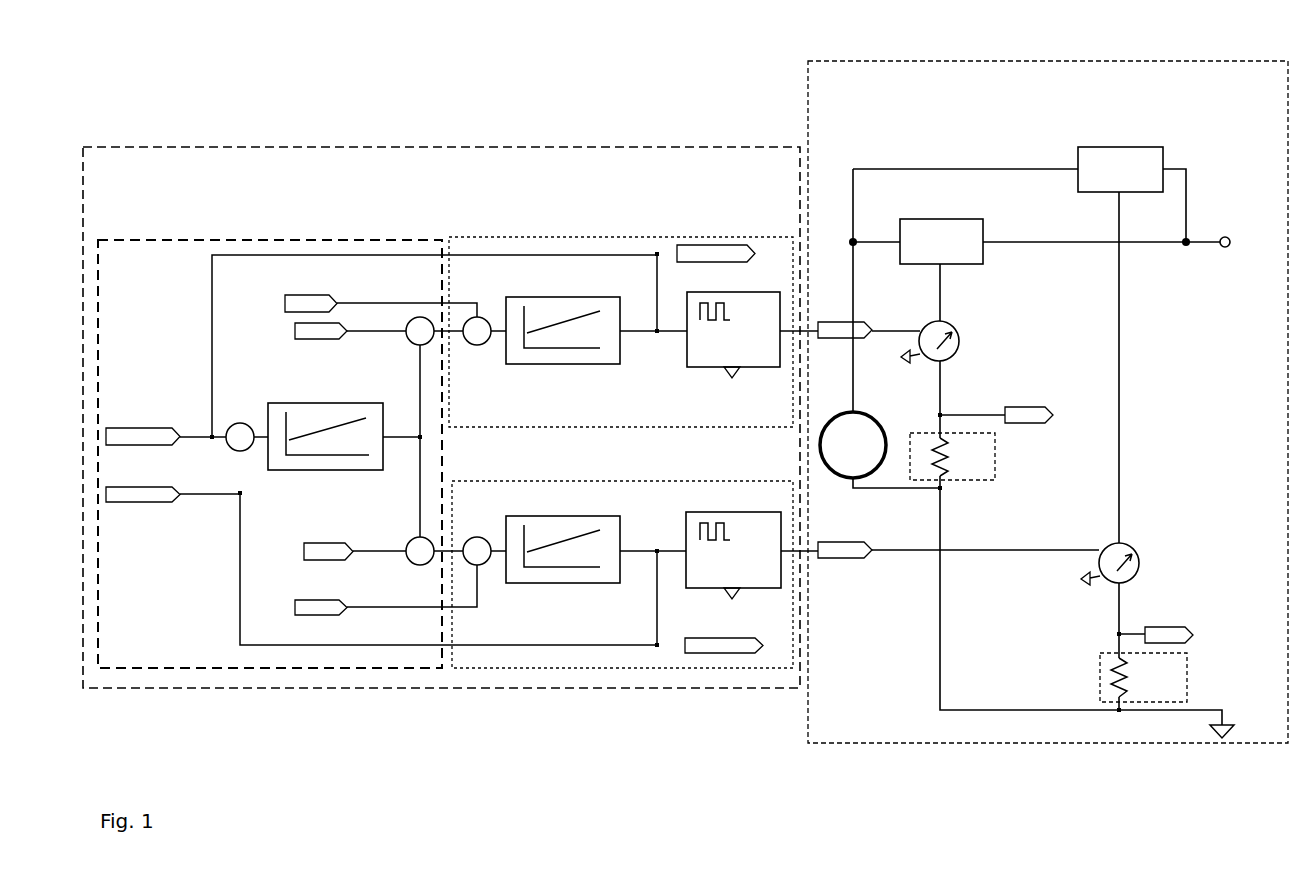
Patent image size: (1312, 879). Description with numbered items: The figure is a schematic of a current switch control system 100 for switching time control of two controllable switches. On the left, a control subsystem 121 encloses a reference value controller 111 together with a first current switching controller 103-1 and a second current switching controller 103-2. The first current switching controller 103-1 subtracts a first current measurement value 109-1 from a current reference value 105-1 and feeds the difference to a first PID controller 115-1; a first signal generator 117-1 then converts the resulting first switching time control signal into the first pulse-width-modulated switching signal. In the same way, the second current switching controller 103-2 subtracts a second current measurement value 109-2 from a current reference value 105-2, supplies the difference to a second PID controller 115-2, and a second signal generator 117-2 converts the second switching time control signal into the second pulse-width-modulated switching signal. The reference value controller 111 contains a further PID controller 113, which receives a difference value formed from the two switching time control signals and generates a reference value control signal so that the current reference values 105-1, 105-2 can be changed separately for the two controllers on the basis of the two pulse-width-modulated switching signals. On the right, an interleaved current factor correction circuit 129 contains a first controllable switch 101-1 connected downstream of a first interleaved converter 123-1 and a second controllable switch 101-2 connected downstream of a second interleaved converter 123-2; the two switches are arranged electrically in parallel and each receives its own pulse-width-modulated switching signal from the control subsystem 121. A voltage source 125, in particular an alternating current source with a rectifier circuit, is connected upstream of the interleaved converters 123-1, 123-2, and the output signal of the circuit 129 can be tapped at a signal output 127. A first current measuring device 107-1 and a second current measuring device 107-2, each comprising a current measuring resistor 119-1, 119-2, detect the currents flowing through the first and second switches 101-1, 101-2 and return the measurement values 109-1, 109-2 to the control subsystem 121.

The current switch control system 100 is at (240, 86).
The control subsystem 121 is at (165, 147).
The reference value controller 111 is at (308, 240).
The further PID controller 113 is at (337, 465).
The first current switching controller 103-1 is at (520, 237).
The second current switching controller 103-2 is at (520, 480).
The current reference value 105-1 is at (350, 343).
The current reference value 105-2 is at (355, 539).
The first current measurement value 109-1 is at (674, 347).
The second current measurement value 109-2 is at (749, 604).
The first PID controller 115-1 is at (567, 356).
The second PID controller 115-2 is at (563, 573).
The first signal generator 117-1 is at (702, 367).
The second signal generator 117-2 is at (702, 580).
The interleaved current factor correction circuit 129 is at (913, 61).
The first interleaved converter 123-1 is at (941, 241).
The second interleaved converter 123-2 is at (1120, 169).
The signal output 127 is at (1237, 225).
The voltage source 125 is at (853, 445).
The first controllable switch 101-1 is at (928, 328).
The second controllable switch 101-2 is at (1130, 551).
The first current measuring device 107-1 is at (927, 431).
The second current measuring device 107-2 is at (1190, 662).
The current measuring resistor 119-1 is at (995, 460).
The current measuring resistor 119-2 is at (1187, 678).